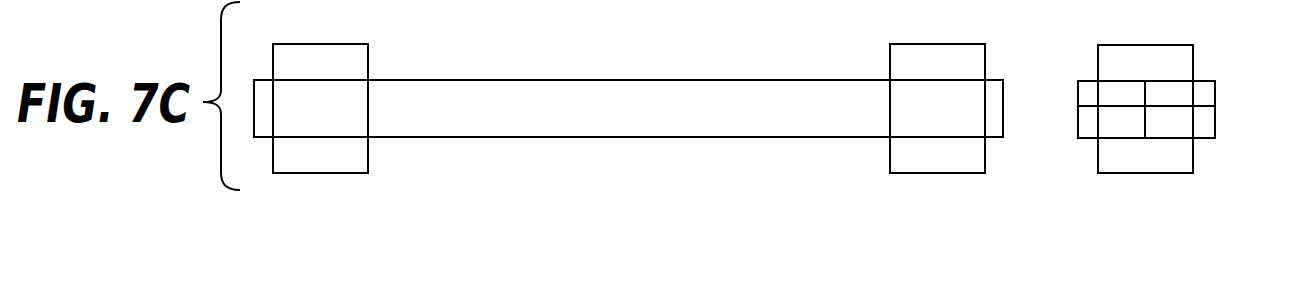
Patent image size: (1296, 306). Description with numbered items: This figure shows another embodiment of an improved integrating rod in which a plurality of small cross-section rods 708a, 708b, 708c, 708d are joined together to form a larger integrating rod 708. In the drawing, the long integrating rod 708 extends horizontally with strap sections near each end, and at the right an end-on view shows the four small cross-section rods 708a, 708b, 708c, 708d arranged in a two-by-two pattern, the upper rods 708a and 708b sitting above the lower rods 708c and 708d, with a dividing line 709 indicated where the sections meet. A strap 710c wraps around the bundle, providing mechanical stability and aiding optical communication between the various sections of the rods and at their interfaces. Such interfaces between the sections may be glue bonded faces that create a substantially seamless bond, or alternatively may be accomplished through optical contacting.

The integrating rod 708 is at (567, 80).
The small cross-section rod 708a is at (1113, 93).
The small cross-section rod 708b is at (1202, 92).
The small cross-section rod 708c is at (1123, 128).
The small cross-section rod 708d is at (1202, 128).
The dividing line 709 is at (1145, 120).
The strap 710c is at (1143, 45).